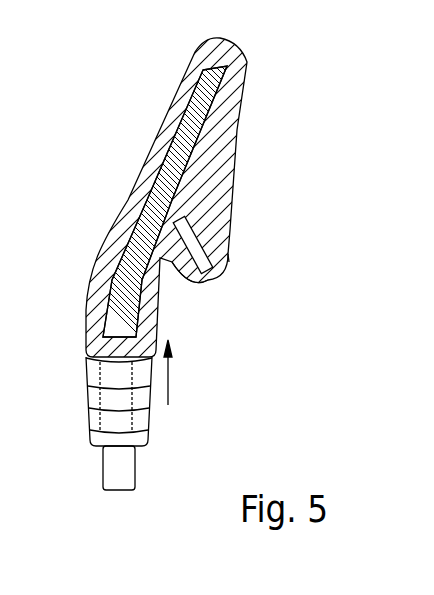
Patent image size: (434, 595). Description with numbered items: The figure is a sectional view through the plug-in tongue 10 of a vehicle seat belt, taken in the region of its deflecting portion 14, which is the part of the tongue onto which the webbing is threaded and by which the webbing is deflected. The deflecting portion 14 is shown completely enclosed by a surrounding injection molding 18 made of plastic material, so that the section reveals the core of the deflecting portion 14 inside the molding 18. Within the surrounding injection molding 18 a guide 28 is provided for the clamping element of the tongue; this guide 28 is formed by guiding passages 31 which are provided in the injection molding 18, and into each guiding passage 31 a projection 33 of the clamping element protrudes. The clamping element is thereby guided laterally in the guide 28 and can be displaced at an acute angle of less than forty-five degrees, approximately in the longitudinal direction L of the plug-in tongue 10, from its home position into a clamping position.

The plug-in tongue 10 is at (244, 297).
The deflecting portion 14 is at (177, 159).
The surrounding injection molding 18 is at (227, 163).
The guide 28 is at (232, 254).
The guiding passage 31 is at (206, 231).
The projection 33 is at (201, 268).
The longitudinal direction L is at (170, 373).